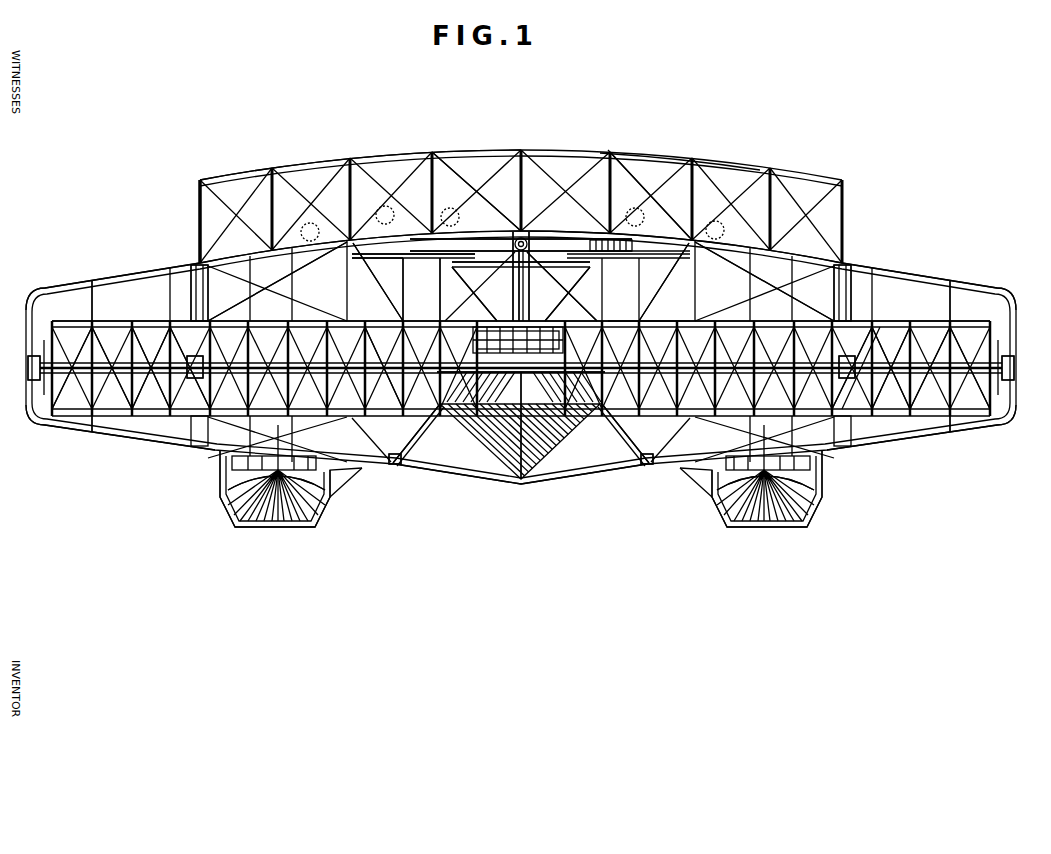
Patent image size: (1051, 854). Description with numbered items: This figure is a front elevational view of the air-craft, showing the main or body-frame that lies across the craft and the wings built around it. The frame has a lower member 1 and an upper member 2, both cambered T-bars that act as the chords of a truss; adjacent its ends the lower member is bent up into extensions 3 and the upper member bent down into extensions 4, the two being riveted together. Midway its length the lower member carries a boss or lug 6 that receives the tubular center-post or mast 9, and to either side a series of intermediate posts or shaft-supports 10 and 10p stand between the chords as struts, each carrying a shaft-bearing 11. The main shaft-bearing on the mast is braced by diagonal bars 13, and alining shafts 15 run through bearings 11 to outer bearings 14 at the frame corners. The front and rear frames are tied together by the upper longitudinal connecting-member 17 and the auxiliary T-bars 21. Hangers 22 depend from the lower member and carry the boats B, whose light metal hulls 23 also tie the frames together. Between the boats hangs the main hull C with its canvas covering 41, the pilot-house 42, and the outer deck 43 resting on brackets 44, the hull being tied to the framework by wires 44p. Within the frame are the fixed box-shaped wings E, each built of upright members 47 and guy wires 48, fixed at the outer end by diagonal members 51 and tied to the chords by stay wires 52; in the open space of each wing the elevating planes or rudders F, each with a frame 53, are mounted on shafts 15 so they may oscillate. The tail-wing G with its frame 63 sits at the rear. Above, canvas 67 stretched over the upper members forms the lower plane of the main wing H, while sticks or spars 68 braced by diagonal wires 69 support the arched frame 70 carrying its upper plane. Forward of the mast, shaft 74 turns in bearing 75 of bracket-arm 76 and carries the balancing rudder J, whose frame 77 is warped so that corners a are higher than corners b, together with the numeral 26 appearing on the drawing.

The lower member 1 is at (128, 438).
The upper member 2 is at (148, 280).
The upwardly presented extension 3 is at (32, 410).
The downwardly presented extension 4 is at (35, 305).
The boss or lug 6 is at (630, 252).
The center-post or mast 9 is at (530, 300).
The intermediate post or shaft-support 10 is at (345, 292).
The outer intermediate post or shaft-support 10p is at (202, 302).
The shaft-bearing 11 is at (190, 378).
The diagonal or oblique brace-bar 13 is at (394, 466).
The outer bearing 14 is at (28, 376).
The alining shaft 15 is at (372, 360).
The upper main longitudinal connecting-member 17 is at (524, 233).
The auxiliary longitudinal T-bar 21 is at (740, 250).
The hanger 22 is at (262, 527).
The hull of boat 23 is at (262, 476).
The strut 26 is at (480, 282).
The covering 41 is at (521, 385).
The pilot-house 42 is at (578, 300).
The outer deck 43 is at (412, 318).
The bracket 44 is at (450, 425).
The tie wire 44p is at (350, 300).
The upright member 47 is at (170, 355).
The stay or guy wire 48 is at (118, 360).
The diagonal member 51 is at (70, 372).
The guy or stay wire 52 is at (92, 302).
The rudder frame 53 is at (134, 372).
The tail-wing frame 63 is at (436, 320).
The canvas section 67 is at (392, 238).
The stick or spar 68 is at (200, 223).
The diagonal stay or guy wire 69 is at (452, 186).
The arched frame 70 is at (290, 172).
The shaft 74 is at (458, 265).
The bearing 75 is at (575, 265).
The bracket-arm 76 is at (560, 272).
The rudder frame 77 is at (398, 256).
The pontoon or boat B is at (322, 508).
The main hull C is at (490, 418).
The fixed lifting and sustaining wing E is at (160, 321).
The elevating plane or rudder F is at (511, 368).
The tail-wing G is at (618, 318).
The main lifting and sustaining wing H is at (610, 158).
The balancing plane or rudder J is at (470, 240).
The high corner a is at (408, 240).
The low corner b is at (405, 258).